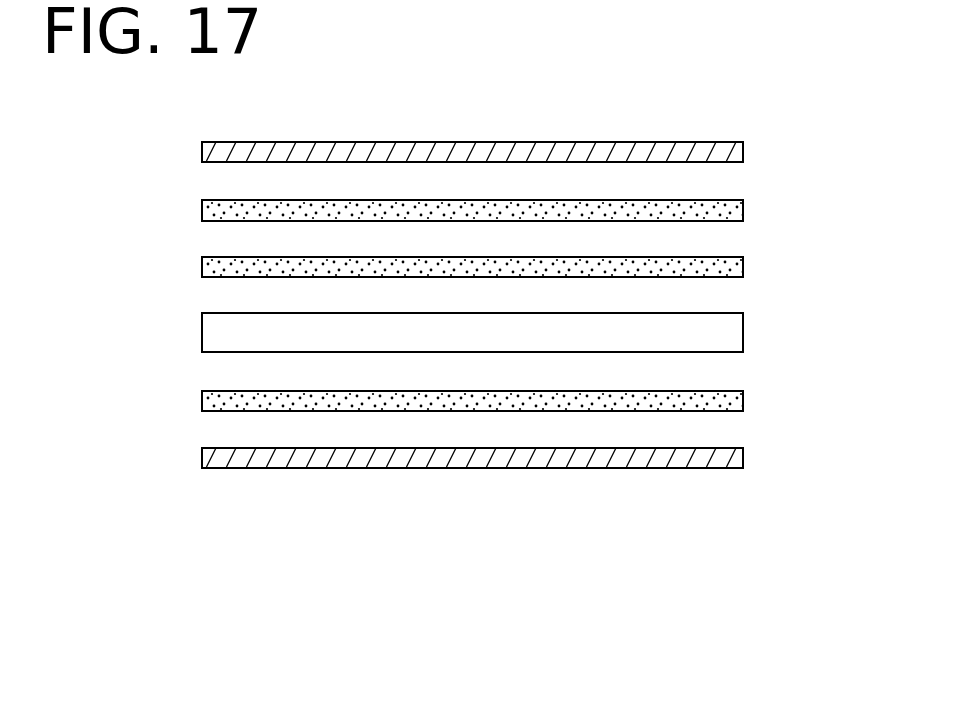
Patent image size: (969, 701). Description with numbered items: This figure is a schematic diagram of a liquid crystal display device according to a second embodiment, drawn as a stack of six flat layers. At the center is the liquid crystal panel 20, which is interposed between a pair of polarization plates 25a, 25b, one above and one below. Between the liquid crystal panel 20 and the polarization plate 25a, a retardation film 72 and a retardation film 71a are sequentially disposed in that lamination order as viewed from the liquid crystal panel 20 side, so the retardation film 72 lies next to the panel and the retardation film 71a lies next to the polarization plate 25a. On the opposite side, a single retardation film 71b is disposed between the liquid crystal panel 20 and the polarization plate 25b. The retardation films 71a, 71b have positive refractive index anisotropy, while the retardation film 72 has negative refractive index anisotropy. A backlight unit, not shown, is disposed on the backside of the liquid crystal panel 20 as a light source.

The polarization plate 25a is at (728, 150).
The retardation film 71a is at (728, 208).
The retardation film 72 is at (728, 265).
The liquid crystal panel 20 is at (728, 335).
The retardation film 71b is at (728, 398).
The polarization plate 25b is at (728, 456).